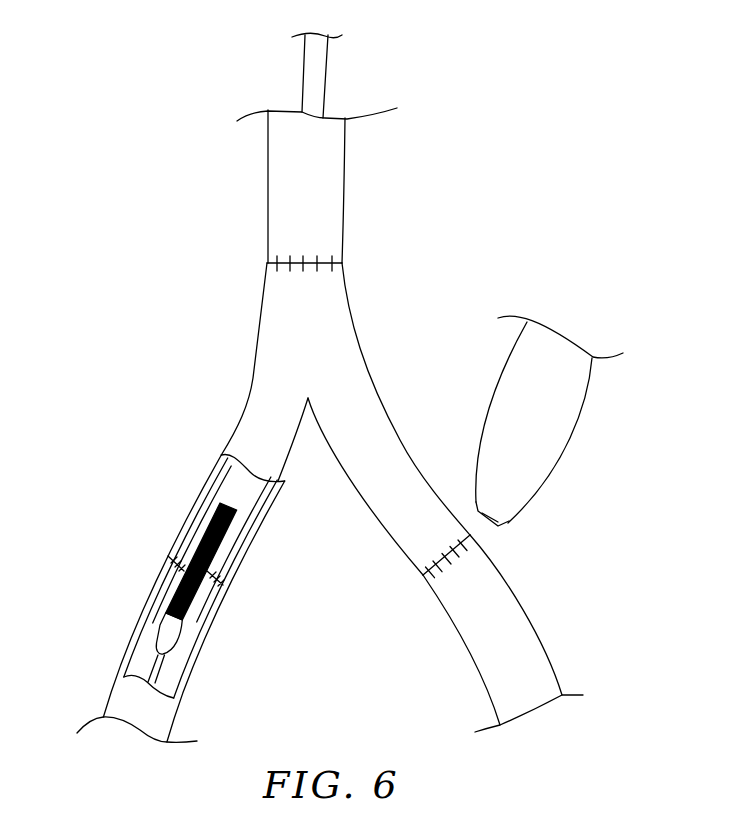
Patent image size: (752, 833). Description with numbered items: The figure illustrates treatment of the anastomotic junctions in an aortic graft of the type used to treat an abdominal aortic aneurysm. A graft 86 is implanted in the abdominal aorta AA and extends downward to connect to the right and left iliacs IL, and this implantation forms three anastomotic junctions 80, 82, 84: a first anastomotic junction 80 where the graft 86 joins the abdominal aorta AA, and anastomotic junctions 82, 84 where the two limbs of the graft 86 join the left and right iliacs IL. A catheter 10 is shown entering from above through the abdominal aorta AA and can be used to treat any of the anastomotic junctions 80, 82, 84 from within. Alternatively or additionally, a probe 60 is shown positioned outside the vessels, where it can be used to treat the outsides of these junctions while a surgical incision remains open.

The catheter 10 is at (320, 78).
The abdominal aorta AA is at (318, 187).
The anastomotic junction 80 is at (267, 263).
The graft 86 is at (342, 343).
The anastomotic junction 84 is at (423, 575).
The anastomotic junction 82 is at (168, 557).
The iliacs IL is at (122, 705).
The probe 60 is at (557, 400).